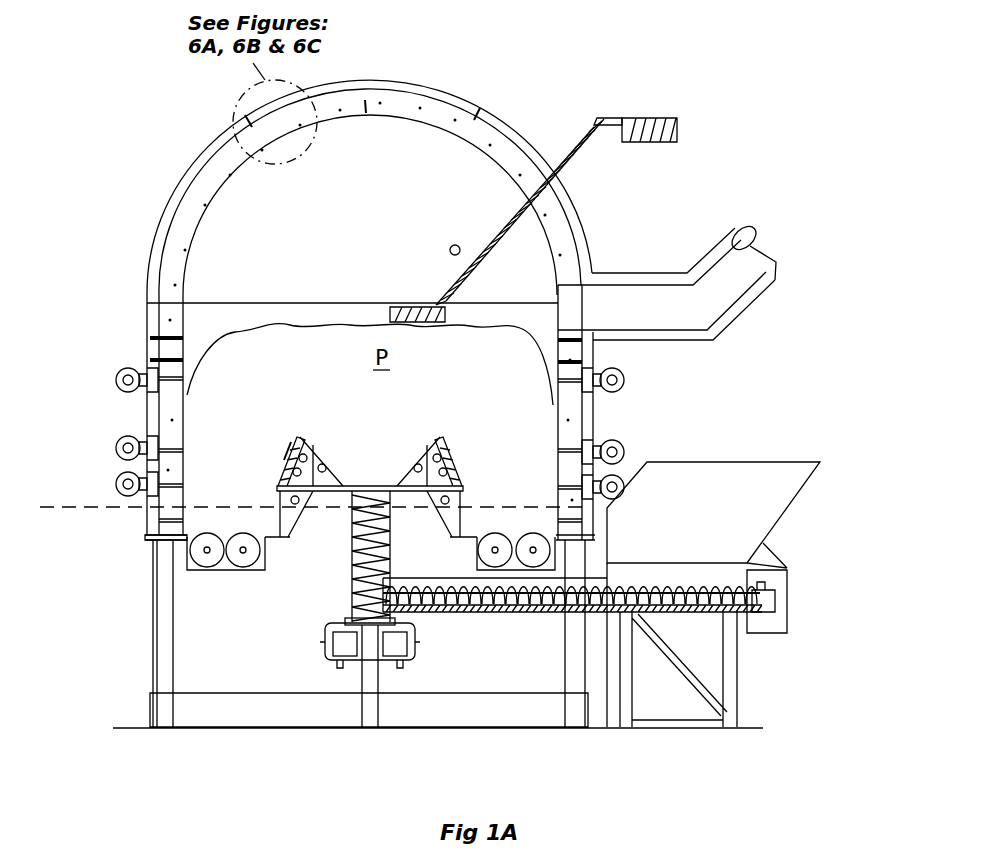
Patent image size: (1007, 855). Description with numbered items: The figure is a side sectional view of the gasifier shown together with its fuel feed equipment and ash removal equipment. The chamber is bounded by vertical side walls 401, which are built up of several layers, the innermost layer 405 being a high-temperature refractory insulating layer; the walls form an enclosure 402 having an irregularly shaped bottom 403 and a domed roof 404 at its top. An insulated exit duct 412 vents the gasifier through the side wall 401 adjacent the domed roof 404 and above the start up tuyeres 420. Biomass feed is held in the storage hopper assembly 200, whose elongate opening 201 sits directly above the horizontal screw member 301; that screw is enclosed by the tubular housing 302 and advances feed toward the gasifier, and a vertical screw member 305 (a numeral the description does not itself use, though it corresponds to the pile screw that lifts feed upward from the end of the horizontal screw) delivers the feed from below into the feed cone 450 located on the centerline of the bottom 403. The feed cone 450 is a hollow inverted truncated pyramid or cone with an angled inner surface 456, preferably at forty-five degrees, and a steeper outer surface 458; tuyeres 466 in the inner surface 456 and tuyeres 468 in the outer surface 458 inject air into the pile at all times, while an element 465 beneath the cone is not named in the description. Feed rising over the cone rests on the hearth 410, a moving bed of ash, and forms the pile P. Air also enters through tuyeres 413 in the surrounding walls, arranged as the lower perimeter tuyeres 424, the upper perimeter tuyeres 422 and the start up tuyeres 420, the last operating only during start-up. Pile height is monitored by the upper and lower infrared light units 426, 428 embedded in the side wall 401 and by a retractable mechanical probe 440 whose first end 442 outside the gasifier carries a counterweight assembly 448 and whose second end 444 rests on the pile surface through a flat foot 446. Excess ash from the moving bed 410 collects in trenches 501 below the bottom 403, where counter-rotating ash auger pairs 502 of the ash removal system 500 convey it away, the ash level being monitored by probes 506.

The storage hopper assembly 200 is at (710, 503).
The elongate opening 201 is at (787, 568).
The horizontal screw member 301 is at (488, 612).
The tubular housing 302 is at (545, 613).
The vertical lift screw 305 is at (352, 578).
The side walls 401 is at (147, 322).
The enclosure 402 is at (365, 199).
The bottom 403 is at (150, 541).
The domed roof 404 is at (400, 83).
The innermost layer 405 is at (380, 118).
The hearth 410 is at (88, 503).
The exit duct 412 is at (618, 297).
The tuyeres 413 is at (160, 447).
The start up tuyeres 420 is at (190, 392).
The upper perimeter tuyeres 422 is at (190, 446).
The lower perimeter tuyeres 424 is at (182, 478).
The upper infrared light unit 426 is at (173, 333).
The lower infrared light unit 428 is at (185, 360).
The mechanical probe 440 is at (574, 140).
The first end 442 is at (600, 117).
The second end 444 is at (440, 300).
The foot 446 is at (397, 308).
The counterweight assembly 448 is at (654, 143).
The feed cone 450 is at (388, 466).
The inner surface 456 is at (405, 480).
The outer surface 458 is at (458, 462).
The support bracket 465 is at (371, 514).
The tuyeres 466 is at (323, 462).
The tuyeres 468 is at (286, 457).
The ash removal system 500 is at (371, 600).
The trench 501 is at (226, 570).
The ash auger pair 502 is at (268, 548).
The probes 506 is at (145, 538).